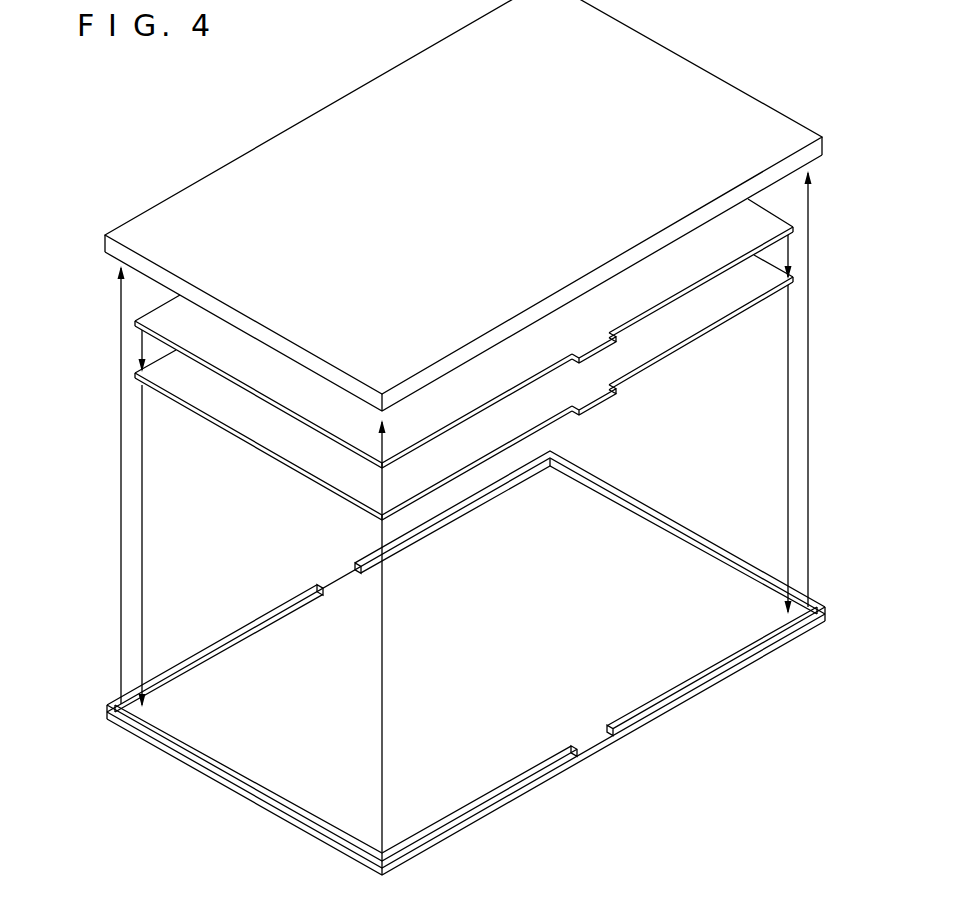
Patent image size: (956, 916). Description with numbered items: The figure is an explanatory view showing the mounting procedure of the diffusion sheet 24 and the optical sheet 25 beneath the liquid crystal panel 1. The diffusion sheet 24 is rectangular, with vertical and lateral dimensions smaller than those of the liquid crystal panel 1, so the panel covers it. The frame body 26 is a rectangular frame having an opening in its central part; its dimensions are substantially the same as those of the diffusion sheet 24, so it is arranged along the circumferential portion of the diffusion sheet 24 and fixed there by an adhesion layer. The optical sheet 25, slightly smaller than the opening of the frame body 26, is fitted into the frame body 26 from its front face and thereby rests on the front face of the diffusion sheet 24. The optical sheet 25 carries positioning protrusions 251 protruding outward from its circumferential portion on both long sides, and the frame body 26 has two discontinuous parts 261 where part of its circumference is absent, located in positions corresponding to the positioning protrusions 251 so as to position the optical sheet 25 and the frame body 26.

The liquid crystal panel 1 is at (313, 138).
The optical sheet 25 is at (464, 359).
The positioning protrusion 251 is at (595, 342).
The diffusion sheet 24 is at (473, 823).
The frame body 26 is at (466, 656).
The discontinuous part 261 is at (339, 584).